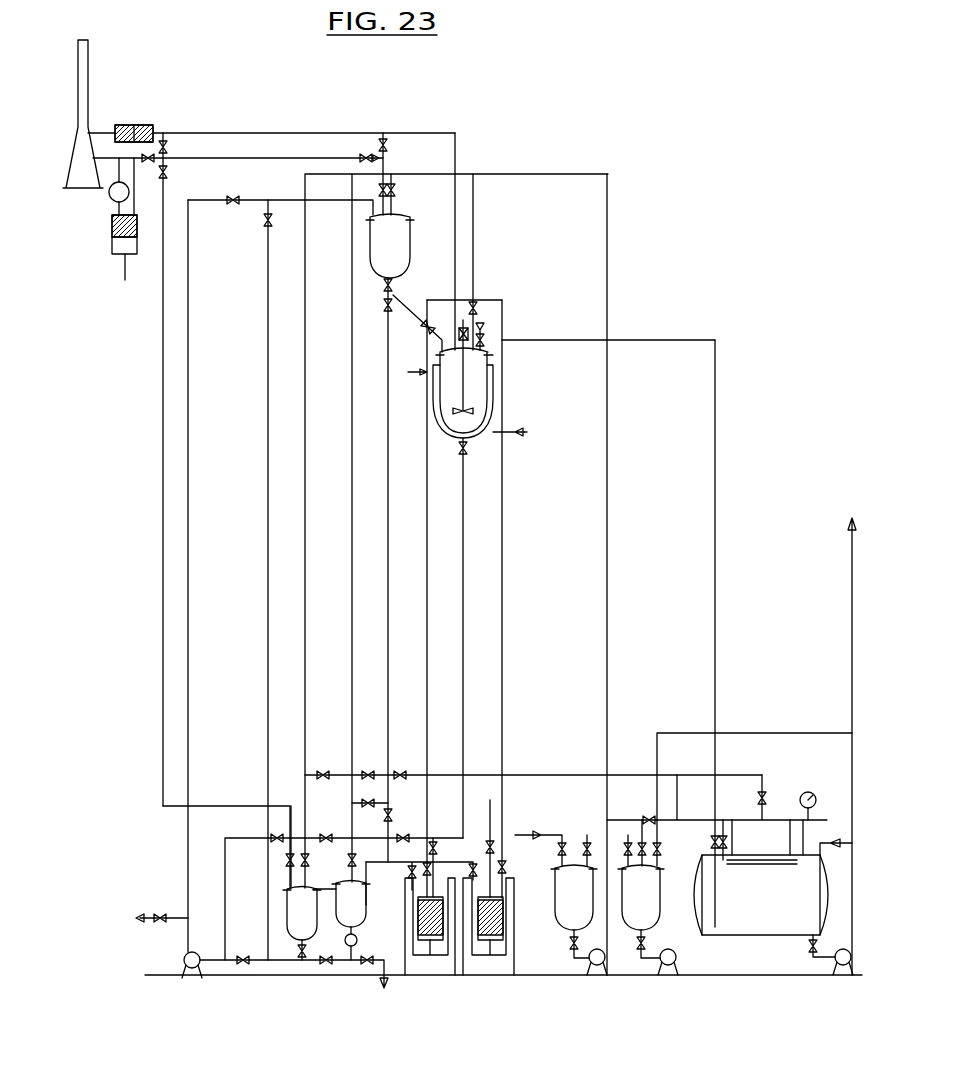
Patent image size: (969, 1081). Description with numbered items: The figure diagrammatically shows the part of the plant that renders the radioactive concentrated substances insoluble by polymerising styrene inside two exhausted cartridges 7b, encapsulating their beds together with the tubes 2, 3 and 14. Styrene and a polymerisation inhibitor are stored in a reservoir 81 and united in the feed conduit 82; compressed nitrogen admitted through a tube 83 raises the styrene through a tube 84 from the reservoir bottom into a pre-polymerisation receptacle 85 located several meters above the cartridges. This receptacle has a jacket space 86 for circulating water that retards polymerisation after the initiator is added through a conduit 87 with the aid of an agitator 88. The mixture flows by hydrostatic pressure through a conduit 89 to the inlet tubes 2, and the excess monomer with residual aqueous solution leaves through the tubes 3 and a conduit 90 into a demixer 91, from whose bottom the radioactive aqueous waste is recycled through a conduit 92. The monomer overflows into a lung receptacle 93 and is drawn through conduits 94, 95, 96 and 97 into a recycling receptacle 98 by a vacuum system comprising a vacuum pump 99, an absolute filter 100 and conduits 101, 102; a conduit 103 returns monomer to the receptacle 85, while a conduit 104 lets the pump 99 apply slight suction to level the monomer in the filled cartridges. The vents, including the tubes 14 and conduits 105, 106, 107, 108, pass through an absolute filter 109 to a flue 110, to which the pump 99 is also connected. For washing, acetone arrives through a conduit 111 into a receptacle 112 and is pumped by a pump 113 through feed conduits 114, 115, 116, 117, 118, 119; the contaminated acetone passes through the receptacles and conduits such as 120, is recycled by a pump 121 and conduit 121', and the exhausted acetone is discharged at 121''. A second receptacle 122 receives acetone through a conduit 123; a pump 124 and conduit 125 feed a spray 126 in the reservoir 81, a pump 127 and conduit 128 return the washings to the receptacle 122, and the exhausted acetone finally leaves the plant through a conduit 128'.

The inlet tube 2 is at (436, 848).
The tube 3 is at (413, 906).
The cartridge 7b is at (488, 957).
The tube 14 is at (420, 866).
The reservoir 81 is at (788, 924).
The feed conduit 82 is at (838, 840).
The tube 83 is at (820, 818).
The tube 84 is at (715, 535).
The pre-polymerisation receptacle 85 is at (476, 370).
The space 86 is at (493, 413).
The conduit 87 is at (485, 331).
The agitator 88 is at (466, 437).
The conduit 89 is at (466, 548).
The conduit 90 is at (376, 865).
The demixer 91 is at (351, 921).
The conduit 92 is at (378, 975).
The lung receptacle 93 is at (316, 921).
The conduit 94 is at (298, 950).
The conduit 95 is at (266, 965).
The conduit 96 is at (266, 780).
The conduit 97 is at (333, 200).
The recycling receptacle 98 is at (380, 281).
The vacuum pump 99 is at (110, 197).
The absolute filter 100 is at (123, 237).
The conduit 101 is at (229, 160).
The conduit 102 is at (378, 182).
The conduit 103 is at (417, 335).
The conduit 104 is at (160, 458).
The conduit 105 is at (502, 733).
The conduit 106 is at (426, 700).
The conduit 107 is at (440, 301).
The conduit 108 is at (455, 213).
The absolute filter 109 is at (140, 125).
The flue 110 is at (87, 80).
The conduit 111 is at (526, 834).
The receptacle 112 is at (587, 898).
The pump 113 is at (596, 968).
The conduit 114 is at (608, 572).
The conduit 115 is at (475, 225).
The conduit 116 is at (433, 174).
The conduit 117 is at (396, 180).
The conduit 118 is at (352, 365).
The conduit 119 is at (305, 368).
The conduit 120 is at (388, 628).
The pump 121 is at (191, 989).
The conduit 121' is at (230, 580).
The discharge 121'' is at (161, 884).
The second receptacle 122 is at (654, 898).
The conduit 123 is at (643, 842).
The pump 124 is at (660, 968).
The conduit 125 is at (735, 775).
The spray 126 is at (752, 865).
The pump 127 is at (836, 968).
The conduit 128 is at (755, 857).
The conduit 128' is at (814, 746).